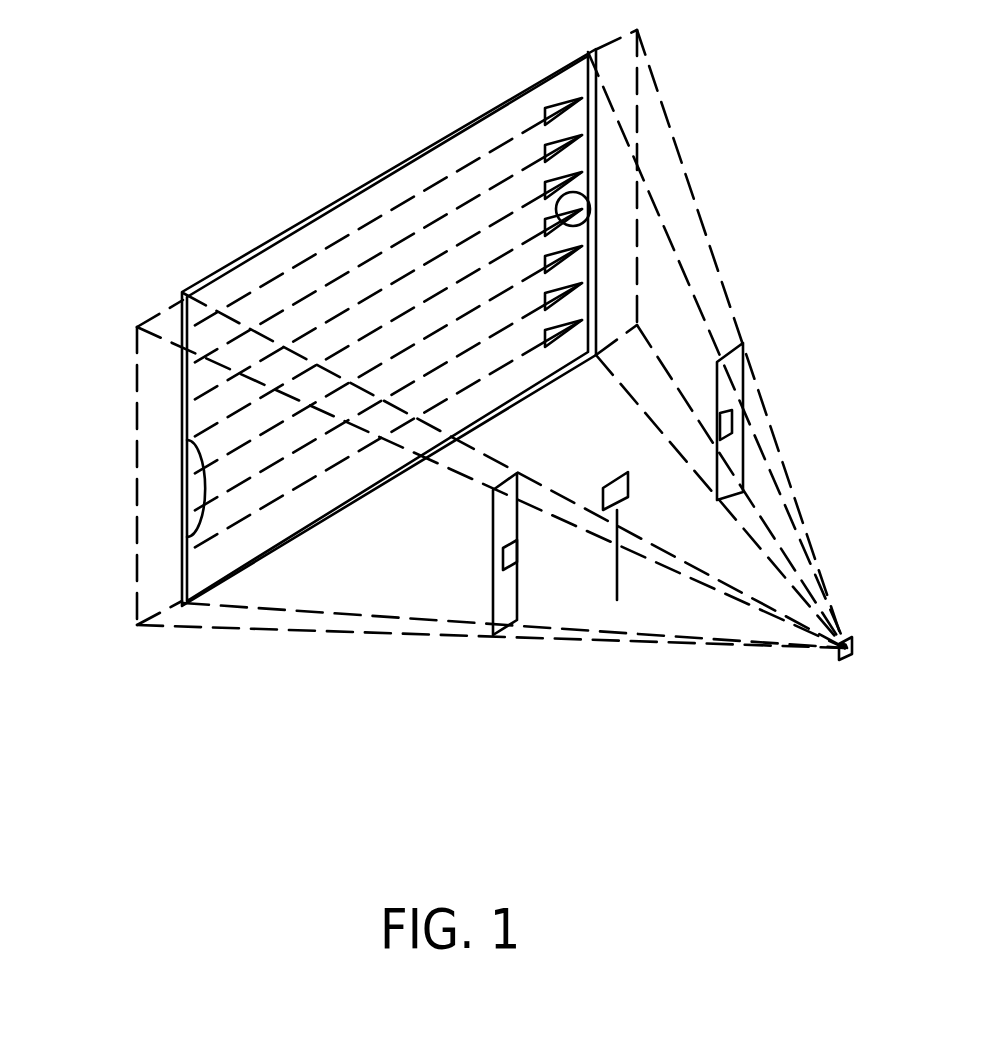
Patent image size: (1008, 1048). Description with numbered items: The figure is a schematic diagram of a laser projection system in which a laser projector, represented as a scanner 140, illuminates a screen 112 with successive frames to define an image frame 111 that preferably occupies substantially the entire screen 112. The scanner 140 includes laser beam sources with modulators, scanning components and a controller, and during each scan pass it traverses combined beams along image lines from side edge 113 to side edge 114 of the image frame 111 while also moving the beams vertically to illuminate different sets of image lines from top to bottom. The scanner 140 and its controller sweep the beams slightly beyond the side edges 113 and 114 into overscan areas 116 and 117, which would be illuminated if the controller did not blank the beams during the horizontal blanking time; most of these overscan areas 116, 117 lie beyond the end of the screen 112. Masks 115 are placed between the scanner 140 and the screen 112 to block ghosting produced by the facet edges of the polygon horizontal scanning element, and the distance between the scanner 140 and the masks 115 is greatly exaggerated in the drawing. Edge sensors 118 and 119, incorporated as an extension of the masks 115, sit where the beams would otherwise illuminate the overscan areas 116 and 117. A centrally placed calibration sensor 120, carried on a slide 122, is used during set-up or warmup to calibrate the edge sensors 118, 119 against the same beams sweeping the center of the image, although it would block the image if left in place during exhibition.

The image frame 111 is at (387, 328).
The screen 112 is at (389, 327).
The side edge 113 is at (125, 601).
The side edge 114 is at (515, 316).
The masks 115 is at (603, 546).
The overscan area 116 is at (329, 327).
The overscan area 117 is at (492, 339).
The edge sensor 118 is at (418, 581).
The edge sensor 119 is at (802, 421).
The calibration sensor 120 is at (562, 469).
The slide 122 is at (513, 663).
The scanner 140 is at (729, 708).